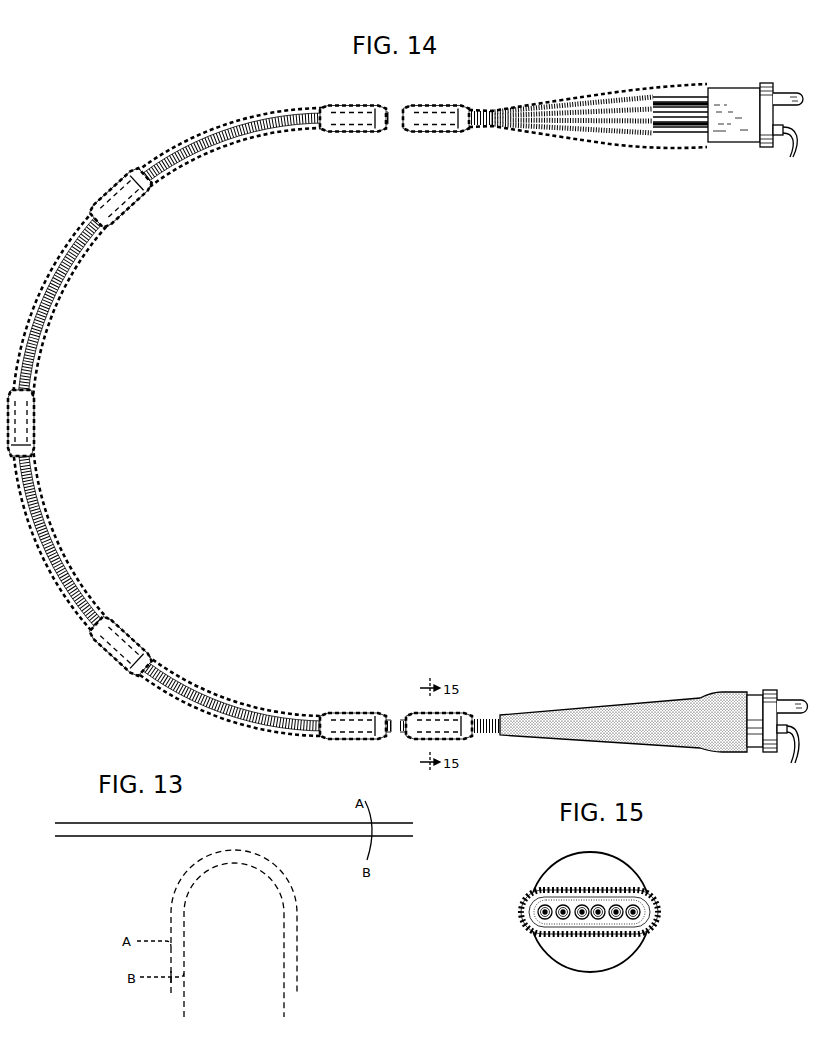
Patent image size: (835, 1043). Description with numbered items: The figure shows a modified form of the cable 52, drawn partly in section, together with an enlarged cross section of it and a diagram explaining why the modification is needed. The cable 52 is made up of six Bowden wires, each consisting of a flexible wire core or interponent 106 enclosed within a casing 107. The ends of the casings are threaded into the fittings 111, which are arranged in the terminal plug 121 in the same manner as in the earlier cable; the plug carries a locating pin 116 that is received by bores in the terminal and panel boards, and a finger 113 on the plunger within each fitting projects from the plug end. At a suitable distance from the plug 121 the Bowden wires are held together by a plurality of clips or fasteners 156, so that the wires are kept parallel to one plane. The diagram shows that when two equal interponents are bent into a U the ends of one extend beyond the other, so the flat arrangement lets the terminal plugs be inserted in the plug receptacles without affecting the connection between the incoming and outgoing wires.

In FIG. 14, the cable 52 is at (249, 121).
In FIG. 15, the cable 52 is at (657, 907).
In FIG. 14, the casing 107 is at (50, 533).
In FIG. 15, the casing 107 is at (607, 891).
In FIG. 14, the clips or fasteners 156 is at (430, 110).
In FIG. 15, the clips or fasteners 156 is at (633, 936).
In FIG. 14, the fittings 111 is at (692, 127).
In FIG. 14, the locating pin 116 is at (781, 96).
In FIG. 14, the terminal plug 121 is at (733, 125).
In FIG. 14, the finger 113 is at (786, 147).
In FIG. 15, the flexible wire core or interponent 106 is at (601, 931).